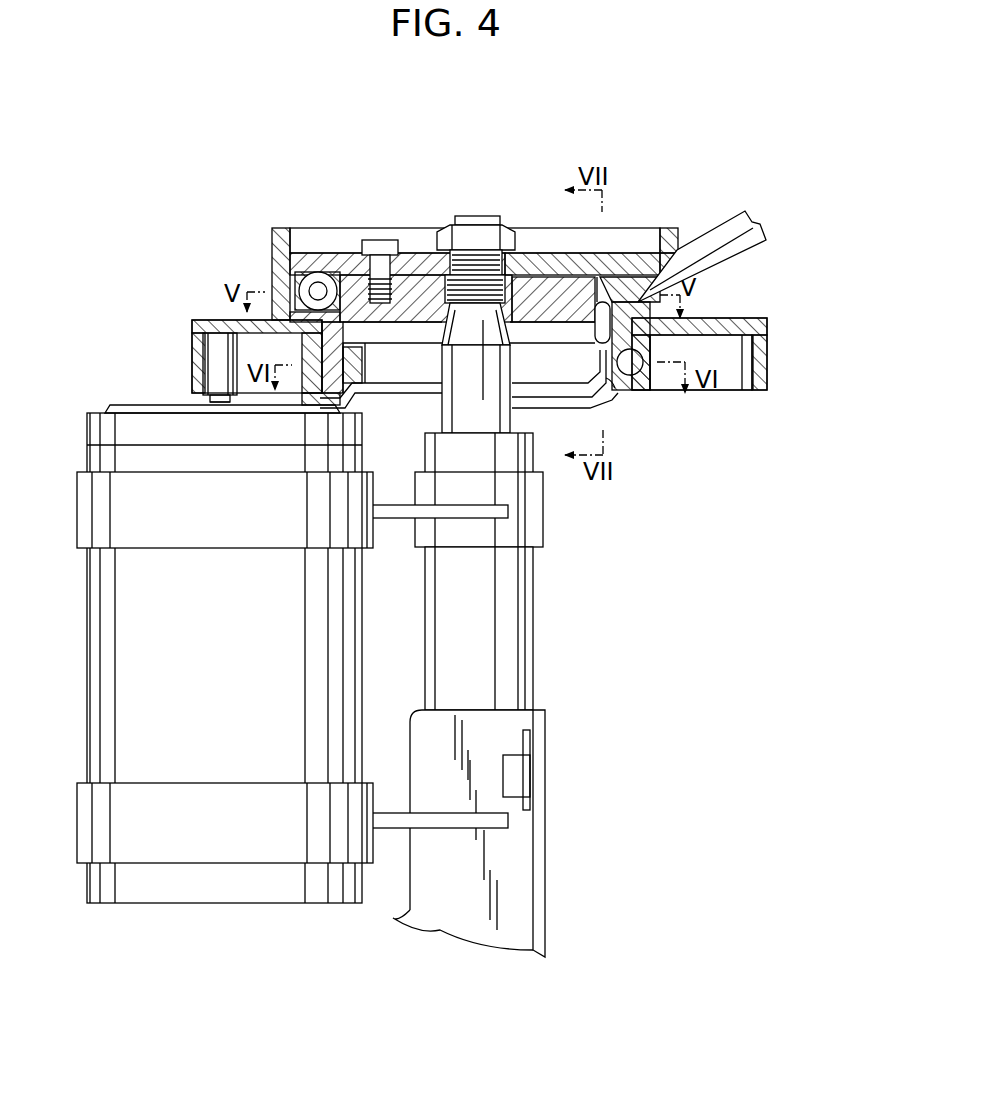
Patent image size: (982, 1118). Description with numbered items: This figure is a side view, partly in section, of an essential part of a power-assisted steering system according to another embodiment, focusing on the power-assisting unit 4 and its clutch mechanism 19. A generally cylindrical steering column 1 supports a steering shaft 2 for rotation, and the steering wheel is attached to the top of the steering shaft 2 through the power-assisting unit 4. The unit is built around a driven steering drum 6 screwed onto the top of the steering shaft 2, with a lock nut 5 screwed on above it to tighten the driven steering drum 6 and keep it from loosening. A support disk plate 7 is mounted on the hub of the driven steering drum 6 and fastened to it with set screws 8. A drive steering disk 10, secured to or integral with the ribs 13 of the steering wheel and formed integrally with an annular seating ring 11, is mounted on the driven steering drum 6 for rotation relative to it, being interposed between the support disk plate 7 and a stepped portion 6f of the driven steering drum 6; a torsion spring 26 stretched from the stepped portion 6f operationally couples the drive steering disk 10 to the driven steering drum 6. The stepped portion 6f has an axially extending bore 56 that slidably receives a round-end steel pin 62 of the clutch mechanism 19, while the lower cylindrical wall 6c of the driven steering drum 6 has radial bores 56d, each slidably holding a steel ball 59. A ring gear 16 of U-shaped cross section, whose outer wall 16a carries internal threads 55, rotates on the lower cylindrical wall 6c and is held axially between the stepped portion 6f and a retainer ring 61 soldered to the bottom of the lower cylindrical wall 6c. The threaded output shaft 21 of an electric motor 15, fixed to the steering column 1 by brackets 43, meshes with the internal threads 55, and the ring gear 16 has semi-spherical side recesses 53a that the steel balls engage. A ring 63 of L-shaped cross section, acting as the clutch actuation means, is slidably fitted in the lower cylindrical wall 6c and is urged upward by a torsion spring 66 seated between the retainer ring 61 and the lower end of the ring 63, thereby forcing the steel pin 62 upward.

The steering column 1 is at (535, 612).
The steering shaft 2 is at (440, 420).
The power-assisting unit 4 is at (638, 146).
The lock nut 5 is at (478, 230).
The driven steering drum 6 is at (428, 292).
The lower cylindrical wall 6c is at (340, 355).
The stepped portion 6f is at (601, 300).
The support disk plate 7 is at (420, 253).
The set screws 8 is at (380, 243).
The drive steering disk 10 is at (636, 273).
The annular seating ring 11 is at (283, 228).
The ribs 13 is at (768, 240).
The electric motor 15 is at (233, 670).
The ring gear 16 is at (737, 318).
The outer wall 16a is at (478, 341).
The clutch mechanism 19 is at (668, 350).
The threaded output shaft 21 is at (222, 402).
The torsion spring 26 is at (273, 266).
The brackets 43 is at (386, 520).
The semi-spherical side recesses 53a is at (655, 392).
The internal threads 55 is at (210, 376).
The axially extending bore 56 is at (594, 314).
The radial bores 56d is at (613, 386).
The steel ball 59 is at (633, 376).
The retainer ring 61 is at (305, 405).
The round-end steel pin 62 is at (592, 330).
The ring 63 is at (593, 362).
The torsion spring 66 is at (380, 397).